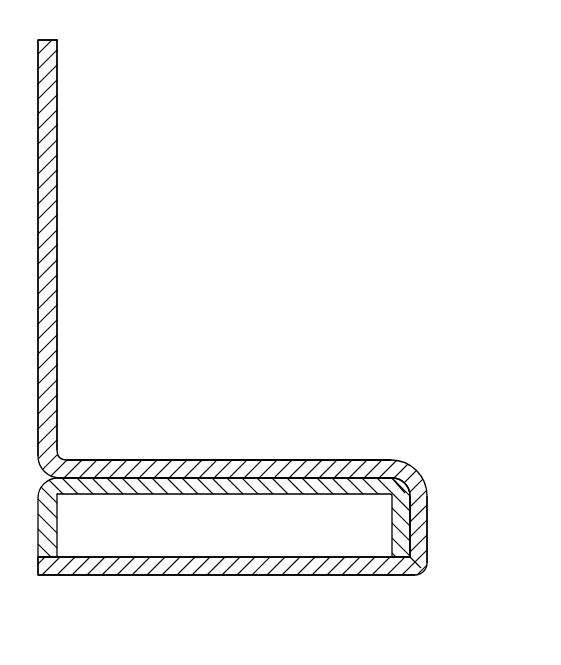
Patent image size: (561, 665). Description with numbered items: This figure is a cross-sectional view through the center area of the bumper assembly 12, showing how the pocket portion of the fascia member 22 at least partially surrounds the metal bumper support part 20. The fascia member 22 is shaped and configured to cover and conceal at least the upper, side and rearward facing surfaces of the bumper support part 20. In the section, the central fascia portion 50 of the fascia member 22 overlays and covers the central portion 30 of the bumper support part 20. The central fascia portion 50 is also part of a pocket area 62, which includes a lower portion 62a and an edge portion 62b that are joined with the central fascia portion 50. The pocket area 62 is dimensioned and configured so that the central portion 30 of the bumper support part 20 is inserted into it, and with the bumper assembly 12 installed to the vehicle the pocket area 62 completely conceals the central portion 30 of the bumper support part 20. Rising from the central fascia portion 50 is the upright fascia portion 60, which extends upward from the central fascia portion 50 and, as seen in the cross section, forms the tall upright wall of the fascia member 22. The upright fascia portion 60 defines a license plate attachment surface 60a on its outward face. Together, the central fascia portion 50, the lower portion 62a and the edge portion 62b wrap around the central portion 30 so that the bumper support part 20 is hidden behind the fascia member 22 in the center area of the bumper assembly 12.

The bumper assembly 12 is at (351, 201).
The fascia member 22 is at (57, 178).
The upright fascia portion 60 is at (47, 266).
The license plate attachment surface 60a is at (56, 337).
The central fascia portion 50 is at (162, 460).
The central portion 30 is at (246, 488).
The bumper support part 20 is at (317, 473).
The pocket area 62 is at (428, 505).
The lower portion 62a is at (307, 577).
The edge portion 62b is at (427, 543).